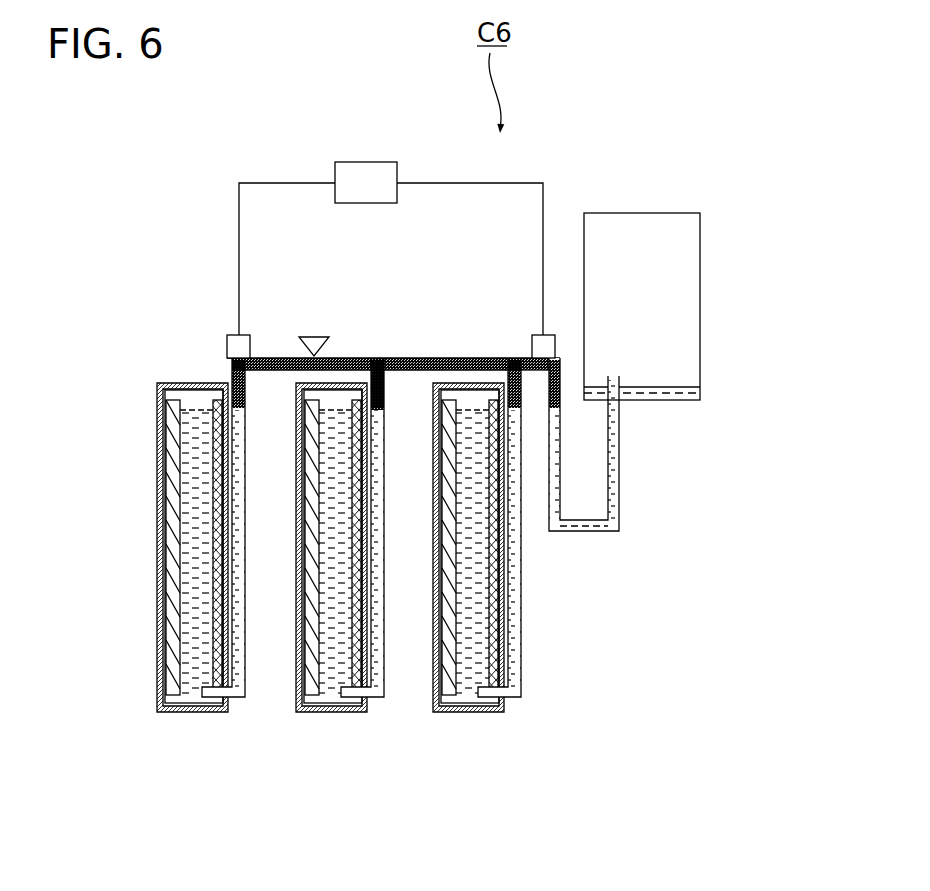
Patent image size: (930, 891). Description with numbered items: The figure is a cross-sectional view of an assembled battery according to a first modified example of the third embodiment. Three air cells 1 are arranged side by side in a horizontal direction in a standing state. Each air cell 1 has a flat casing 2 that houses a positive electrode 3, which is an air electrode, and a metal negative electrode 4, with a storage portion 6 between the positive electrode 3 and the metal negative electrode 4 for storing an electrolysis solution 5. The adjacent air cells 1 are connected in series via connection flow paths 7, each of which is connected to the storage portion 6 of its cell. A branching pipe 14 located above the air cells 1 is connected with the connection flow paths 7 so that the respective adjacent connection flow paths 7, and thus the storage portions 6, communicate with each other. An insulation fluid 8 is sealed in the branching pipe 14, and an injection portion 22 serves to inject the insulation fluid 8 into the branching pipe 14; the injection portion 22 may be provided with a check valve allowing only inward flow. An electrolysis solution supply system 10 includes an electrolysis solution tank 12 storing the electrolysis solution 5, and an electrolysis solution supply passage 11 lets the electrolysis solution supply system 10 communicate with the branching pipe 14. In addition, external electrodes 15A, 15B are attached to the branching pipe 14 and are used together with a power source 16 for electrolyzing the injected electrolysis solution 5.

The air cell 1 is at (319, 574).
The flat casing 2 is at (160, 442).
The positive electrode 3 is at (180, 503).
The metal negative electrode 4 is at (172, 562).
The electrolysis solution 5 is at (193, 633).
The storage portion 6 is at (195, 400).
The connection flow path 7 is at (245, 672).
The insulation fluid 8 is at (377, 358).
The electrolysis solution supply system 10 is at (670, 428).
The electrolysis solution supply passage 11 is at (620, 512).
The electrolysis solution tank 12 is at (700, 253).
The branching pipe 14 is at (423, 357).
The external electrode 15A is at (237, 345).
The external electrode 15B is at (542, 345).
The power source 16 is at (369, 176).
The injection portion 22 is at (317, 330).